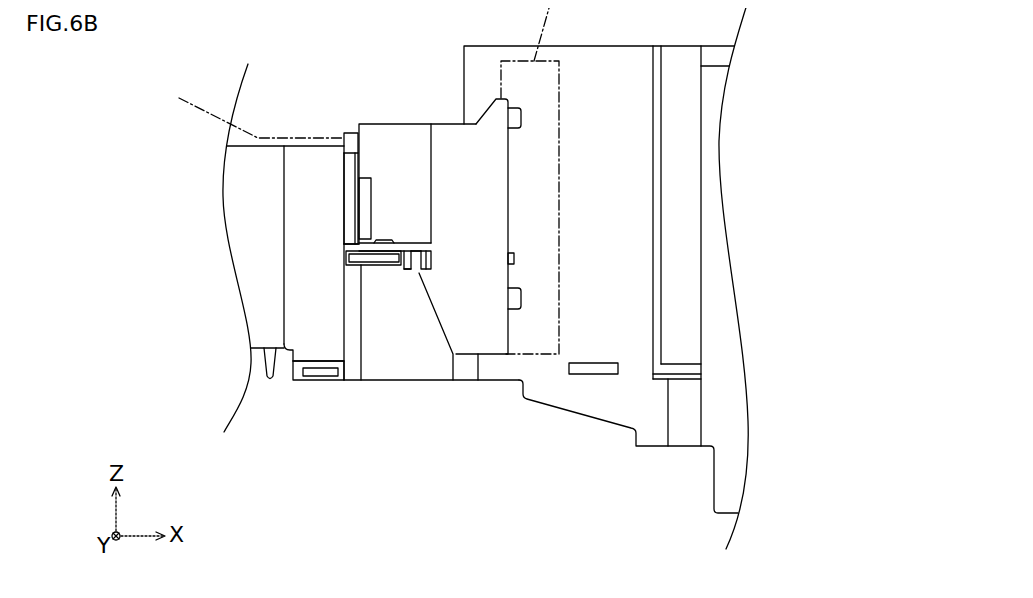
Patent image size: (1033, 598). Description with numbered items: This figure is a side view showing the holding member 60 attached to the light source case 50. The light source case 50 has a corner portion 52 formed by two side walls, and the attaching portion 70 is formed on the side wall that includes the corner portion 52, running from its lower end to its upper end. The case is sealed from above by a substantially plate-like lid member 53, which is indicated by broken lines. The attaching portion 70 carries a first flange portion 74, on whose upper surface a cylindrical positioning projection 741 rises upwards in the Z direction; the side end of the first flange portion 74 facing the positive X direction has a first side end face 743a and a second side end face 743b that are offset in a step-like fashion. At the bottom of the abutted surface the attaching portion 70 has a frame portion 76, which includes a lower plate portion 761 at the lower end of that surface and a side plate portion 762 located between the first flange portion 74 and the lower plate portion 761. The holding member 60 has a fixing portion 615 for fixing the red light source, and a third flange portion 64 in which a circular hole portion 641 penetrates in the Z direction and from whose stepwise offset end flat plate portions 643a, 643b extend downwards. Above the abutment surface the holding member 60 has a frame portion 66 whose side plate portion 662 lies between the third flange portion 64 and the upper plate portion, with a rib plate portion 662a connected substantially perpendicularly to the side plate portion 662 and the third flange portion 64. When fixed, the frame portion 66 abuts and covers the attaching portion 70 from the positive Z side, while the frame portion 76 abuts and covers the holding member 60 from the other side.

The light source case 50 is at (265, 317).
The corner portion 52 is at (434, 384).
The lid member 53 is at (245, 108).
The holding member 60 is at (440, 120).
The third flange portion 64 is at (345, 250).
The frame portion 66 is at (373, 140).
The attaching portion 70 is at (347, 385).
The first flange portion 74 is at (403, 258).
The frame portion 76 is at (441, 363).
The fixing portion 615 is at (517, 215).
The circular hole portion 641 is at (345, 243).
The flat plate portion 643a is at (407, 268).
The flat plate portion 643b is at (430, 265).
The side plate portion 662 is at (365, 147).
The rib plate portion 662a is at (355, 182).
The positioning projection 741 is at (383, 238).
The first side end face 743a is at (403, 262).
The second side end face 743b is at (430, 258).
The lower plate portion 761 is at (385, 381).
The side plate portion 762 is at (452, 380).